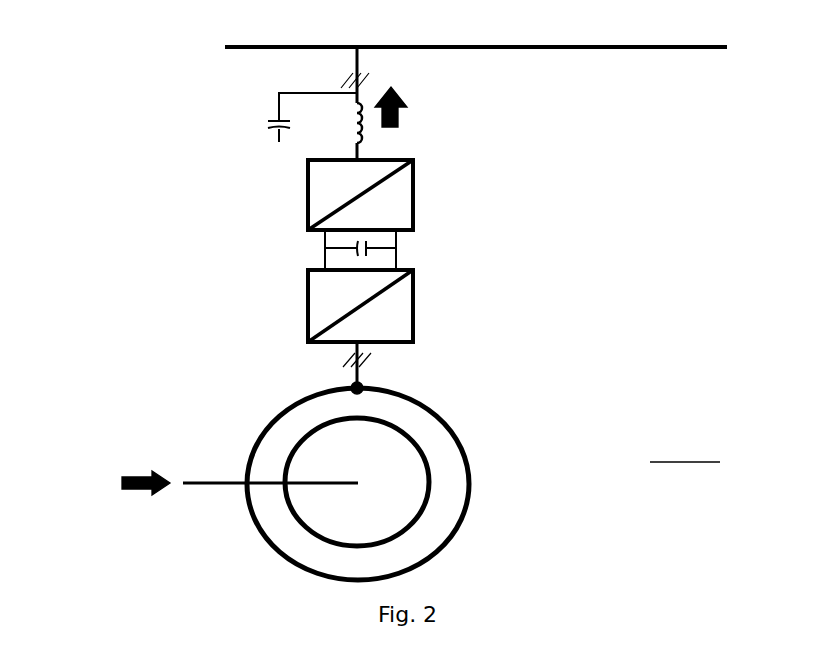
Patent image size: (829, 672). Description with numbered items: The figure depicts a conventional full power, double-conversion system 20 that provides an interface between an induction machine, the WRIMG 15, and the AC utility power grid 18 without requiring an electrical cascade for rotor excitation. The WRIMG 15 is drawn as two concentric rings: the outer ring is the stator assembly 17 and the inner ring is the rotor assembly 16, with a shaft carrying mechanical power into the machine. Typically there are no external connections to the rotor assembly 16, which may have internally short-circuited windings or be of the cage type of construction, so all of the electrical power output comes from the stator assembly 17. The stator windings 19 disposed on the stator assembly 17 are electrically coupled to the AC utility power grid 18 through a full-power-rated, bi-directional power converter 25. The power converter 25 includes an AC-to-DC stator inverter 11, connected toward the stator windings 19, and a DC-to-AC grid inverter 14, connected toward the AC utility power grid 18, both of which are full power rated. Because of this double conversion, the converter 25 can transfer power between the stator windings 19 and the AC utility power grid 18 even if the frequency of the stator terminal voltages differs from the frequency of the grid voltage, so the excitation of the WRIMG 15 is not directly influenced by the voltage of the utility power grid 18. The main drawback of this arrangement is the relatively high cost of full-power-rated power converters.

The full power, double-conversion system 20 is at (138, 222).
The AC utility power grid 18 is at (685, 49).
The DC-to-AC grid inverter 14 is at (308, 208).
The AC-to-DC stator inverter 11 is at (308, 312).
The full-power-rated, bi-directional power converter 25 is at (503, 260).
The WRIMG 15 is at (318, 470).
The stator assembly 17 is at (280, 412).
The rotor assembly 16 is at (420, 515).
The stator windings 19 is at (363, 383).